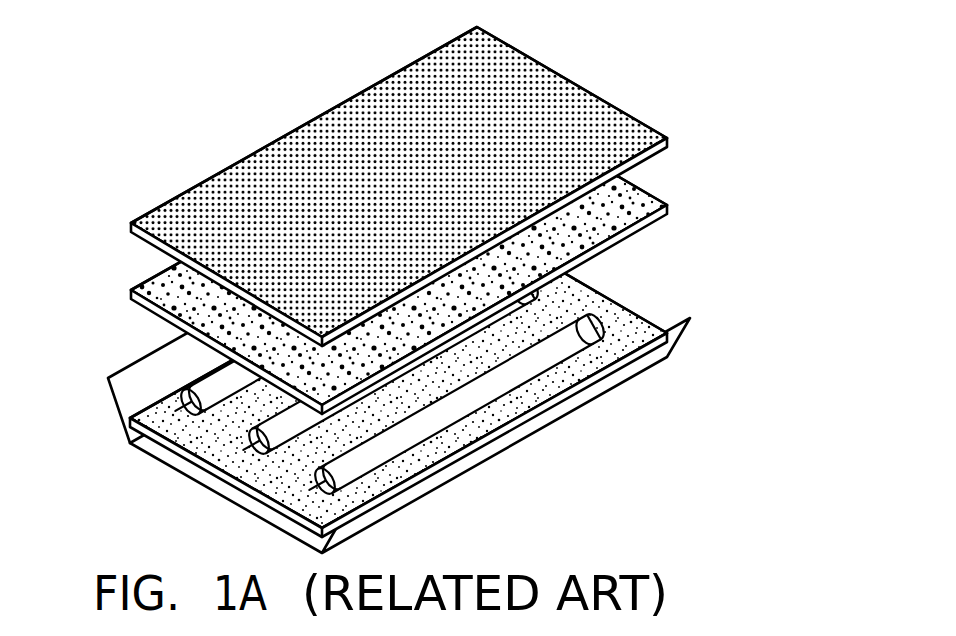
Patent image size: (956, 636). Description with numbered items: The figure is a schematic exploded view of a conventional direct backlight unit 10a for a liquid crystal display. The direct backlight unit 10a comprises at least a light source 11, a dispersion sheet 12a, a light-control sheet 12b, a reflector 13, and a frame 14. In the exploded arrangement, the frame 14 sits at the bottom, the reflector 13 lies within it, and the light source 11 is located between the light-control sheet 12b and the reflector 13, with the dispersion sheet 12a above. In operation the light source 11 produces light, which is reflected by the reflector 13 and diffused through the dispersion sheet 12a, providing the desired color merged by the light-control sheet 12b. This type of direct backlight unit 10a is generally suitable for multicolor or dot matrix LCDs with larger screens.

The direct backlight unit 10a is at (88, 52).
The light source 11 is at (545, 362).
The dispersion sheet 12a is at (585, 90).
The light-control sheet 12b is at (655, 218).
The reflector 13 is at (221, 481).
The frame 14 is at (431, 490).